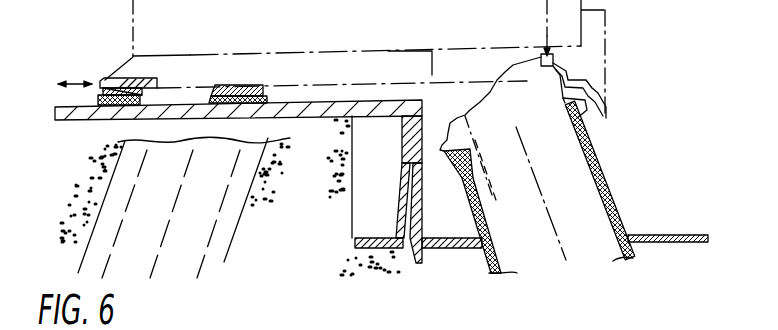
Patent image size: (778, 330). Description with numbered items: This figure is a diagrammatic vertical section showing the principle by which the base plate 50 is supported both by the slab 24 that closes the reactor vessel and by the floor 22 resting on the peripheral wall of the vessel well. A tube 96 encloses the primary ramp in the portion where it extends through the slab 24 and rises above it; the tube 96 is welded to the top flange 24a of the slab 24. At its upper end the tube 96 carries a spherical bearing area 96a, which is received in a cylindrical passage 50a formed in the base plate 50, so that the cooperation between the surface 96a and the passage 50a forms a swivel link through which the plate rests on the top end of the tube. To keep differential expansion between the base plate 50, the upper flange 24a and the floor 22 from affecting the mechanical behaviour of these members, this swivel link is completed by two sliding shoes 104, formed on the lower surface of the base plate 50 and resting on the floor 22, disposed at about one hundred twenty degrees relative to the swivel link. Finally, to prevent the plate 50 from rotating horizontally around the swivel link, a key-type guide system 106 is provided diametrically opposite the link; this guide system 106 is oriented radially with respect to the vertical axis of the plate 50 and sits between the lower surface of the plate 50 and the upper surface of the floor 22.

The floor 22 is at (100, 122).
The slab 24 is at (693, 273).
The top flange of the slab 24a is at (650, 236).
The base plate 50 is at (352, 52).
The cylindrical passage 50a is at (436, 64).
The tube 96 is at (592, 143).
The spherical bearing area 96a is at (556, 65).
The sliding shoes 104 is at (229, 77).
The key-type guide system 106 is at (106, 77).